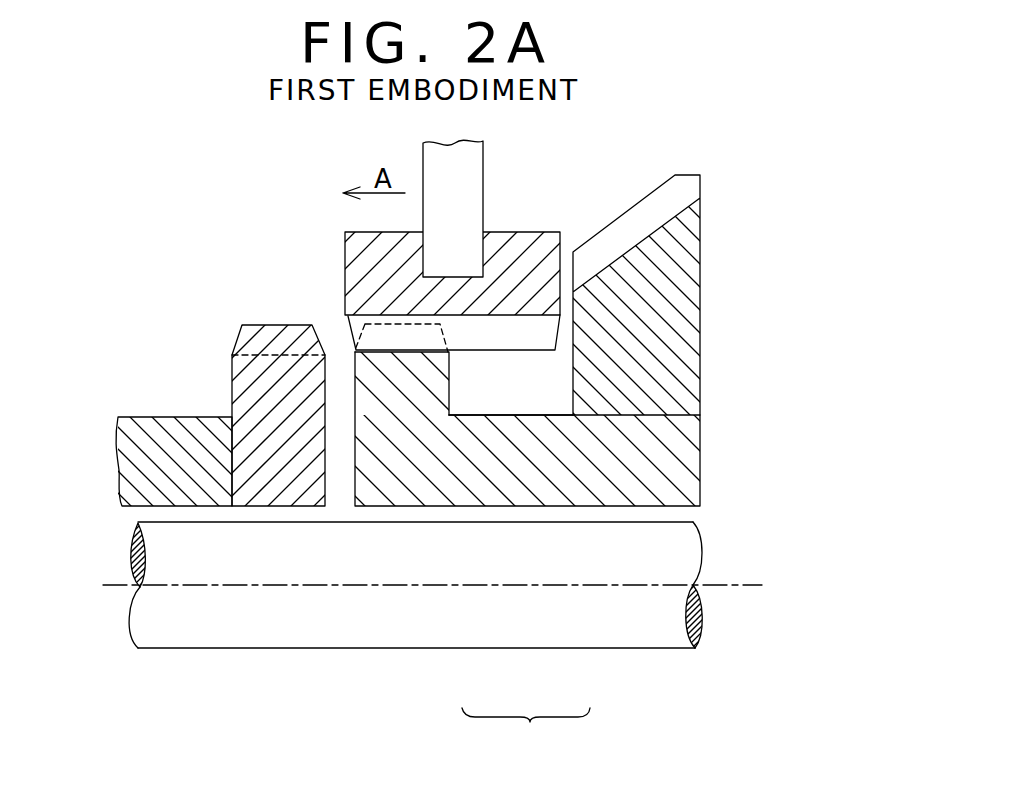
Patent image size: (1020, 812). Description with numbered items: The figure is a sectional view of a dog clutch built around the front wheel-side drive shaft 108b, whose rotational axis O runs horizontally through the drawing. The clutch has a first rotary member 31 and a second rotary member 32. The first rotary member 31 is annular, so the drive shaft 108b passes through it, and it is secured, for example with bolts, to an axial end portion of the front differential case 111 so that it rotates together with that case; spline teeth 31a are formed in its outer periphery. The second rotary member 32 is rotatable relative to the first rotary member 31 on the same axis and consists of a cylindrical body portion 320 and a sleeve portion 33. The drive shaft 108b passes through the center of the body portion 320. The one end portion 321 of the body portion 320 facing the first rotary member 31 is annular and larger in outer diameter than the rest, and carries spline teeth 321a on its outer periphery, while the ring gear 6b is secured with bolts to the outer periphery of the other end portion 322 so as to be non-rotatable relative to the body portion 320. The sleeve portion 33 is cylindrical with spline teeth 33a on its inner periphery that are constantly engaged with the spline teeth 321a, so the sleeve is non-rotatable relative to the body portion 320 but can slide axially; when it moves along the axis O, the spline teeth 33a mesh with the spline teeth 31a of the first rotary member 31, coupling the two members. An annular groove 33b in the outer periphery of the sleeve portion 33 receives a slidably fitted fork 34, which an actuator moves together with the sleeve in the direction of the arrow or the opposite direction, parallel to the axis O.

The ring gear 6b is at (690, 300).
The first rotary member 31 is at (237, 388).
The spline teeth 31a is at (272, 328).
The second rotary member 32 is at (526, 733).
The sleeve portion 33 is at (533, 283).
The spline teeth 33a is at (460, 338).
The annular groove 33b is at (425, 263).
The fork 34 is at (475, 177).
The front wheel-side drive shaft 108b is at (597, 638).
The front differential case 111 is at (167, 422).
The cylindrical body portion 320 is at (558, 468).
The one end portion 321 is at (413, 407).
The spline teeth 321a is at (342, 323).
The other end portion 322 is at (692, 470).
The rotational axis O is at (710, 583).